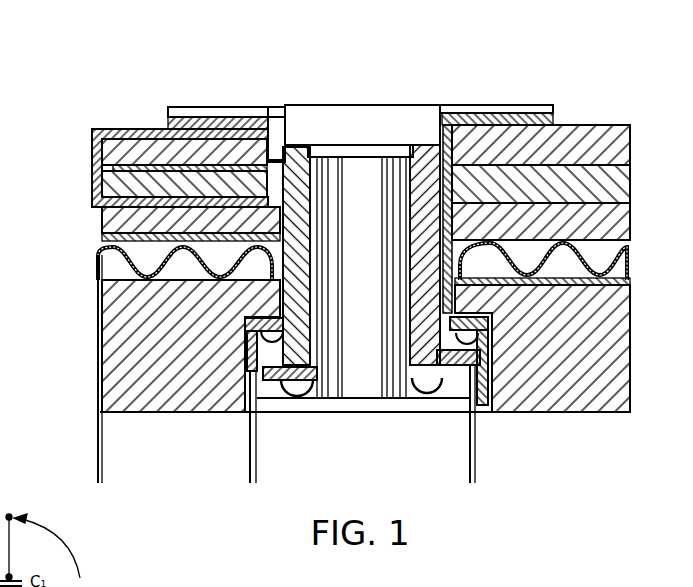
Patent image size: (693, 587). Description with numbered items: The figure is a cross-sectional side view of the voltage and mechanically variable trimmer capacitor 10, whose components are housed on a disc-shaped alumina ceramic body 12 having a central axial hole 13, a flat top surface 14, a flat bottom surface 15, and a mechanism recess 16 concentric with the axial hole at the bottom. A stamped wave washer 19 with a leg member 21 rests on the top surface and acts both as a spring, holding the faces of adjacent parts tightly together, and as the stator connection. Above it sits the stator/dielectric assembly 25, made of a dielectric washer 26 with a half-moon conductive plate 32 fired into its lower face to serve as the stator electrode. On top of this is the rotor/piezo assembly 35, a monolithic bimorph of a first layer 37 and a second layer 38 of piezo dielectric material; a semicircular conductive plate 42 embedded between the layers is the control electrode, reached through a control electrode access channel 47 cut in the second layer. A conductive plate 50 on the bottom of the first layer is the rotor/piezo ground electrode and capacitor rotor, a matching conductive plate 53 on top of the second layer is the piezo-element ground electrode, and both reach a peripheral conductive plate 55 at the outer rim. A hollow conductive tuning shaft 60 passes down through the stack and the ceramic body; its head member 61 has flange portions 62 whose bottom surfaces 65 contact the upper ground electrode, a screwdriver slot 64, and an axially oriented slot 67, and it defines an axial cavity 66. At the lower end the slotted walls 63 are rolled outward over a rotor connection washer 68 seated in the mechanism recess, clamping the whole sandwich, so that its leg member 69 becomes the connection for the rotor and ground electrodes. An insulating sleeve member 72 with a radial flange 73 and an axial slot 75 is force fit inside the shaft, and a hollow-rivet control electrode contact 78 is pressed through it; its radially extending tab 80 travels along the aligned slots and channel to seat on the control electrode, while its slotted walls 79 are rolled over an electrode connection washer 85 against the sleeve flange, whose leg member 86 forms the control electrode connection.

The voltage and mechanically variable trimmer capacitor 10 is at (580, 65).
The ceramic body 12 is at (632, 352).
The axial hole 13 is at (457, 300).
The top surface 14 is at (622, 270).
The bottom surface 15 is at (605, 412).
The mechanism recess 16 is at (478, 405).
The stamped wave washer 19 is at (95, 254).
The leg member 21 is at (98, 445).
The stator/dielectric assembly 25 is at (632, 222).
The dielectric washer 26 is at (100, 222).
The conductive plate 32 is at (100, 240).
The rotor/piezo assembly 35 is at (632, 165).
The first layer 37 is at (632, 188).
The second layer 38 is at (632, 145).
The conductive plate 42 is at (122, 130).
The control electrode access channel 47 is at (288, 147).
The conductive plate 50 is at (118, 193).
The conductive plate 53 is at (130, 164).
The peripheral conductive plate 55 is at (100, 165).
The tuning shaft 60 is at (406, 104).
The head member 61 is at (455, 105).
The flange portions 62 is at (227, 108).
The slotted walls 63 is at (246, 335).
The screwdriver slot 64 is at (556, 106).
The bottom surfaces 65 is at (160, 117).
The axial cavity 66 is at (370, 123).
The axially oriented slot 67 is at (280, 107).
The rotor connection washer 68 is at (250, 318).
The leg member 69 is at (250, 470).
The sleeve member 72 is at (340, 398).
The radial flange 73 is at (265, 345).
The axial slot 75 is at (306, 150).
The control electrode contact 78 is at (392, 380).
The slotted walls 79 is at (435, 395).
The radially extending tab 80 is at (300, 152).
The electrode connection washer 85 is at (460, 407).
The leg member 86 is at (475, 470).